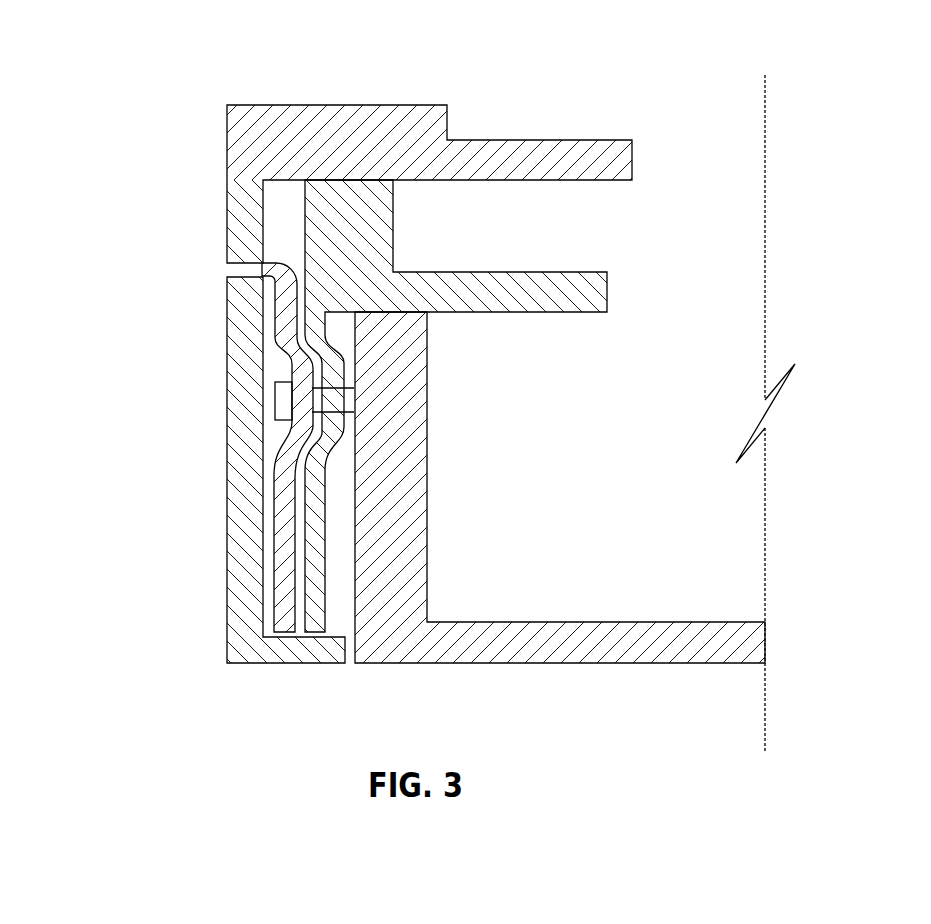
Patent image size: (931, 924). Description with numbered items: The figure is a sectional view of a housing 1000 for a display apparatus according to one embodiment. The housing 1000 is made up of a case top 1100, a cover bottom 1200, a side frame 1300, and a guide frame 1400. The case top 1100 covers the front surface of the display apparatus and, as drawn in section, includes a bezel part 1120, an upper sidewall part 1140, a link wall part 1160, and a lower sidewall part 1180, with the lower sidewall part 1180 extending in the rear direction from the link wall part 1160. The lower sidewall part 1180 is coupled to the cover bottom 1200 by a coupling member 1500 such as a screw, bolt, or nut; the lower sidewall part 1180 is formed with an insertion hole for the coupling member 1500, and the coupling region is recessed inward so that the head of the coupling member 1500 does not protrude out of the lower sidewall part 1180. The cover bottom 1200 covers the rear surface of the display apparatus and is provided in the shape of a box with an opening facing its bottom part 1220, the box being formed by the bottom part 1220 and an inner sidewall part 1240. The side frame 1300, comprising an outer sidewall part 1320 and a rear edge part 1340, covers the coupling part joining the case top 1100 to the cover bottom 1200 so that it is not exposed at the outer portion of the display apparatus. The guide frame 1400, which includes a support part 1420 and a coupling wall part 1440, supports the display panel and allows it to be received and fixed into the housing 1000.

The housing 1000 is at (437, 32).
The case top 1100 is at (108, 117).
The bezel part 1120 is at (297, 128).
The upper sidewall part 1140 is at (250, 197).
The link wall part 1160 is at (283, 268).
The lower sidewall part 1180 is at (290, 346).
The coupling member 1500 is at (285, 408).
The side frame 1300 is at (108, 540).
The outer sidewall part 1320 is at (250, 546).
The rear edge part 1340 is at (280, 654).
The guide frame 1400 is at (577, 387).
The coupling wall part 1440 is at (338, 387).
The support part 1420 is at (590, 295).
The cover bottom 1200 is at (585, 508).
The inner sidewall part 1240 is at (400, 521).
The bottom part 1220 is at (590, 632).